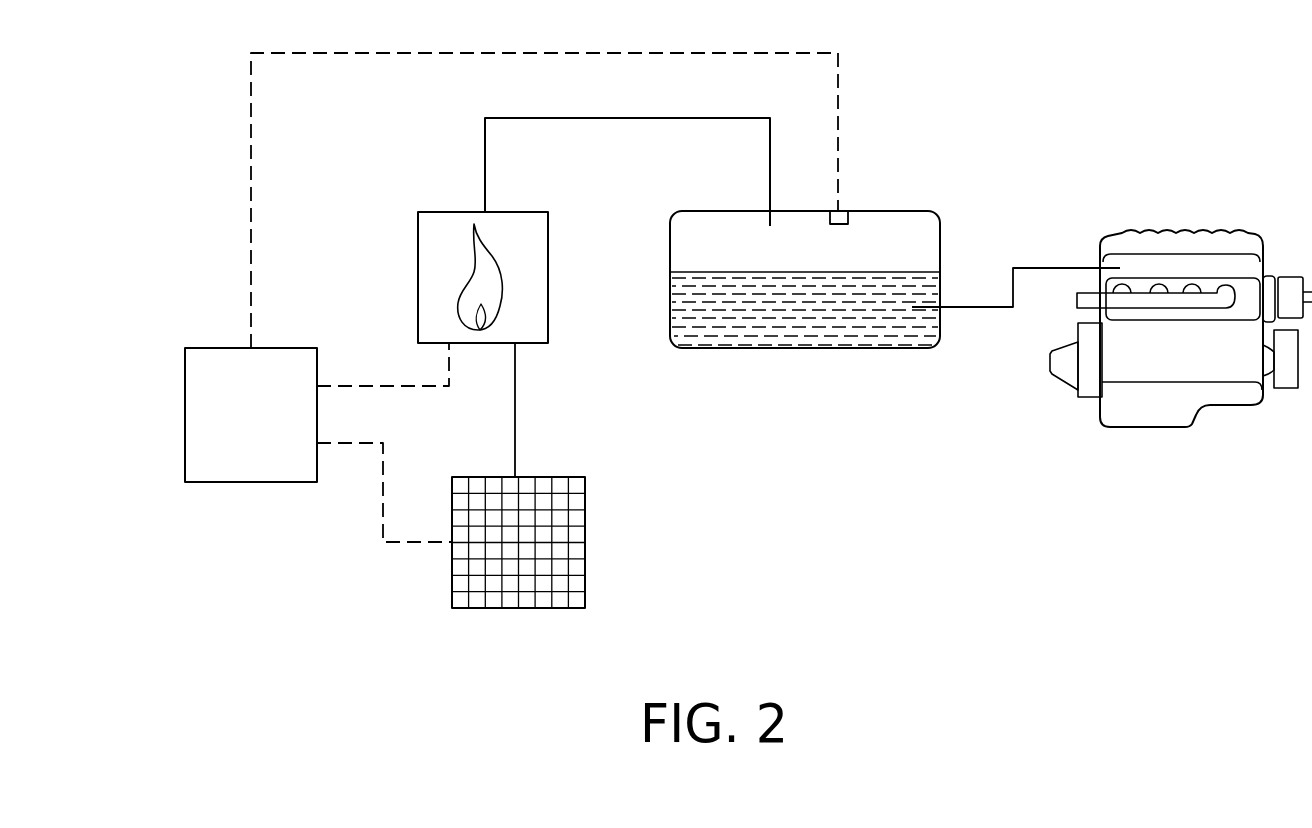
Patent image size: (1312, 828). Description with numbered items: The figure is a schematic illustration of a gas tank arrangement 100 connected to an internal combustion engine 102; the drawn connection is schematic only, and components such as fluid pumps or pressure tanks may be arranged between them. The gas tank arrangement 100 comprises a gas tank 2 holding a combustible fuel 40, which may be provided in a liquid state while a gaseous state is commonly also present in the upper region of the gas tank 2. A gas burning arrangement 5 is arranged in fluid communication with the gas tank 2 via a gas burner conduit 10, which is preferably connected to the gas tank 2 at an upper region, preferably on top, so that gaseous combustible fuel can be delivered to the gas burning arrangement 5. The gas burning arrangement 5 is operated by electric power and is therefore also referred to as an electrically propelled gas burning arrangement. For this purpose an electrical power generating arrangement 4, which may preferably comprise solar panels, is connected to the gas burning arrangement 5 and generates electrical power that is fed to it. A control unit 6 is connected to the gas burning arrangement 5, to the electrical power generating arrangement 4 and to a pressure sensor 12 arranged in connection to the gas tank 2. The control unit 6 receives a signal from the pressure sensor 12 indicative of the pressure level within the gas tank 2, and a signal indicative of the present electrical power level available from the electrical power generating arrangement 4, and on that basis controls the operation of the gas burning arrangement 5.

The gas tank arrangement 100 is at (150, 111).
The gas tank 2 is at (903, 211).
The electrical power generating arrangement 4 is at (560, 477).
The gas burning arrangement 5 is at (449, 212).
The control unit 6 is at (217, 348).
The gas burner conduit 10 is at (627, 118).
The pressure sensor 12 is at (845, 211).
The combustible fuel 40 is at (790, 315).
The internal combustion engine 102 is at (1172, 232).